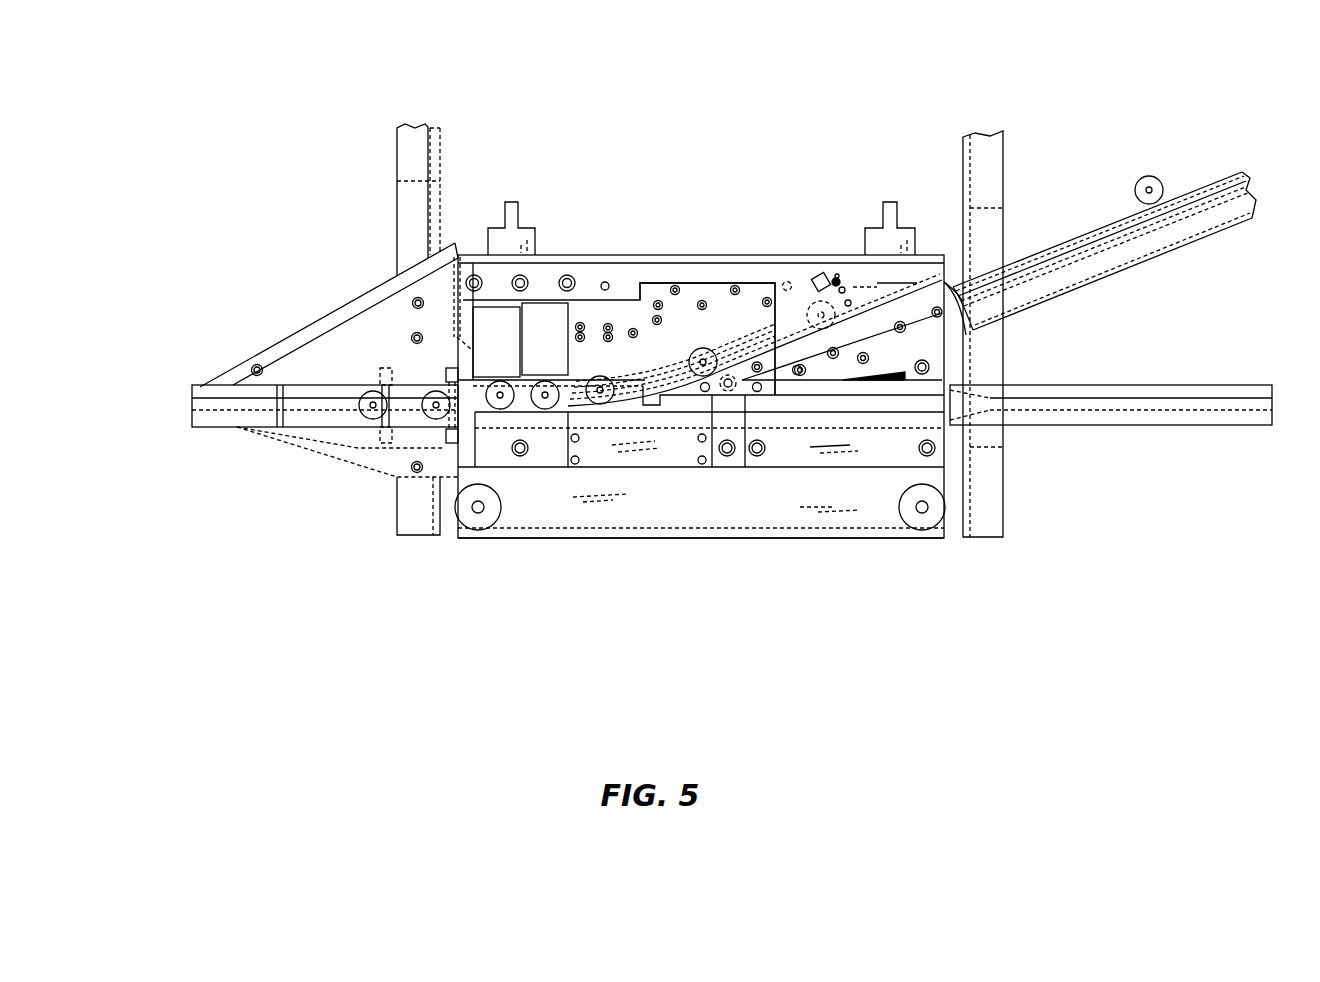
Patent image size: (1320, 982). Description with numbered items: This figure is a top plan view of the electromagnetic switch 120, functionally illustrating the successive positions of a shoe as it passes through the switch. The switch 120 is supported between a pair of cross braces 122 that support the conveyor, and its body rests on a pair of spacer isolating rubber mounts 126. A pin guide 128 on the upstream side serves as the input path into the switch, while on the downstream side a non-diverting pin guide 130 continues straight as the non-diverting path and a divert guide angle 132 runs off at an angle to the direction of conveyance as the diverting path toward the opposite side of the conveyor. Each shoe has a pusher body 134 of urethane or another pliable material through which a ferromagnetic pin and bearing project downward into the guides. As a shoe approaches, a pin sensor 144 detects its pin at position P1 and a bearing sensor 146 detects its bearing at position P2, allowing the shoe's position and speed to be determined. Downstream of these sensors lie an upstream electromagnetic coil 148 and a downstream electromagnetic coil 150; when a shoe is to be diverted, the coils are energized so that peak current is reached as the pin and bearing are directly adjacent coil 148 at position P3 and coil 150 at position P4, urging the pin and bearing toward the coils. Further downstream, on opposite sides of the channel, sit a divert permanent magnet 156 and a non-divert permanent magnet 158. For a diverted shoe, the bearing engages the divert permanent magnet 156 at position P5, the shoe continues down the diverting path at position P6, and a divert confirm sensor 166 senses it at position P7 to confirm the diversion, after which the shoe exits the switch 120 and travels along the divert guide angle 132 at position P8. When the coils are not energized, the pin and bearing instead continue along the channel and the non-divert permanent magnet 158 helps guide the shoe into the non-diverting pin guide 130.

The electromagnetic switch 120 is at (558, 90).
The cross braces 122 is at (417, 532).
The spacer isolating rubber mounts 126 is at (487, 523).
The pin guide 128 is at (207, 391).
The non-diverting pin guide 130 is at (1117, 418).
The divert guide angle 132 is at (1150, 236).
The pusher body 134 is at (698, 503).
The pin sensor 144 is at (372, 376).
The bearing sensor 146 is at (438, 380).
The upstream electromagnetic coil 148 is at (500, 320).
The downstream electromagnetic coil 150 is at (553, 305).
The divert permanent magnet 156 is at (683, 320).
The non-divert permanent magnet 158 is at (652, 460).
The divert confirm sensor 166 is at (826, 277).
The position P1 is at (362, 412).
The position P2 is at (425, 417).
The position P3 is at (493, 400).
The position P4 is at (535, 400).
The position P5 is at (597, 403).
The position P6 is at (688, 358).
The position P7 is at (812, 306).
The position P8 is at (1135, 190).